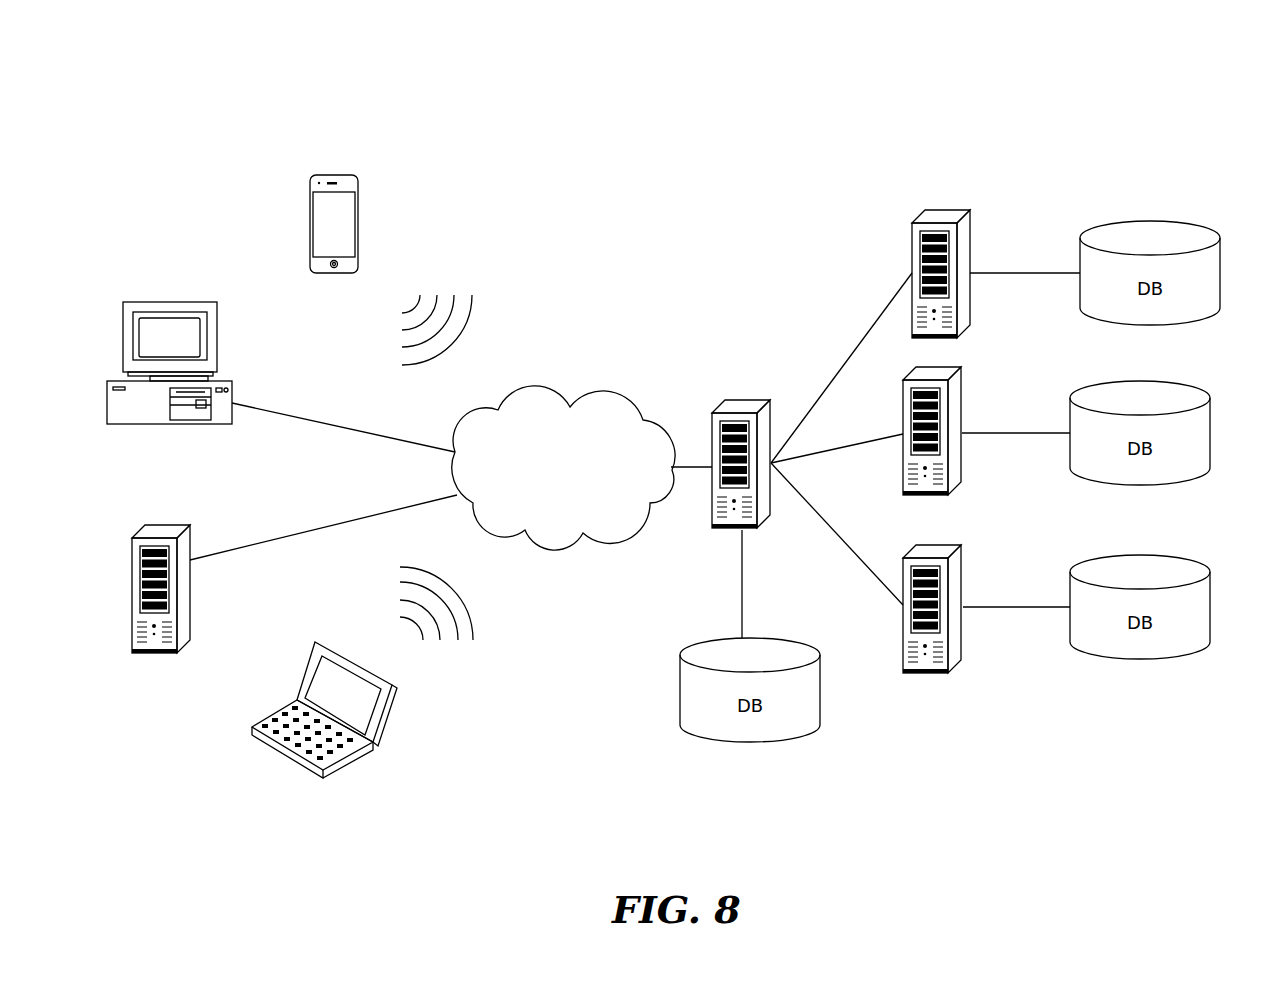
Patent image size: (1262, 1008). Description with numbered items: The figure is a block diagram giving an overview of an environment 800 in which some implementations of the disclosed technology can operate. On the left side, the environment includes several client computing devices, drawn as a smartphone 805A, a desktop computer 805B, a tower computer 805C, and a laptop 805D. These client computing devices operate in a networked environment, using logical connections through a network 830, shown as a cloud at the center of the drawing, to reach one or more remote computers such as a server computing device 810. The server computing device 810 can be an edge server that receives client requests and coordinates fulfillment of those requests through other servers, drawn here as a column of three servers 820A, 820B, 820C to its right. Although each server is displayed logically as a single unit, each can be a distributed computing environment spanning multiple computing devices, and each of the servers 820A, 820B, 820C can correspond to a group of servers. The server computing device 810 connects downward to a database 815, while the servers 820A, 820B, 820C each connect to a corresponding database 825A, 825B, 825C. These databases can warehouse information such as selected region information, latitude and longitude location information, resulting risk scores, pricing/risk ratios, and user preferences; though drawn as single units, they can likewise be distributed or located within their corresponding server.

The environment 800 is at (1024, 93).
The client computing device 805A is at (348, 174).
The client computing device 805B is at (214, 302).
The client computing device 805C is at (180, 525).
The client computing device 805D is at (387, 712).
The server computing device 810 is at (756, 400).
The database 815 is at (800, 641).
The server 820A is at (956, 208).
The server 820B is at (948, 368).
The server 820C is at (951, 543).
The database 825A is at (1147, 221).
The database 825B is at (1137, 381).
The database 825C is at (1137, 555).
The network 830 is at (612, 392).